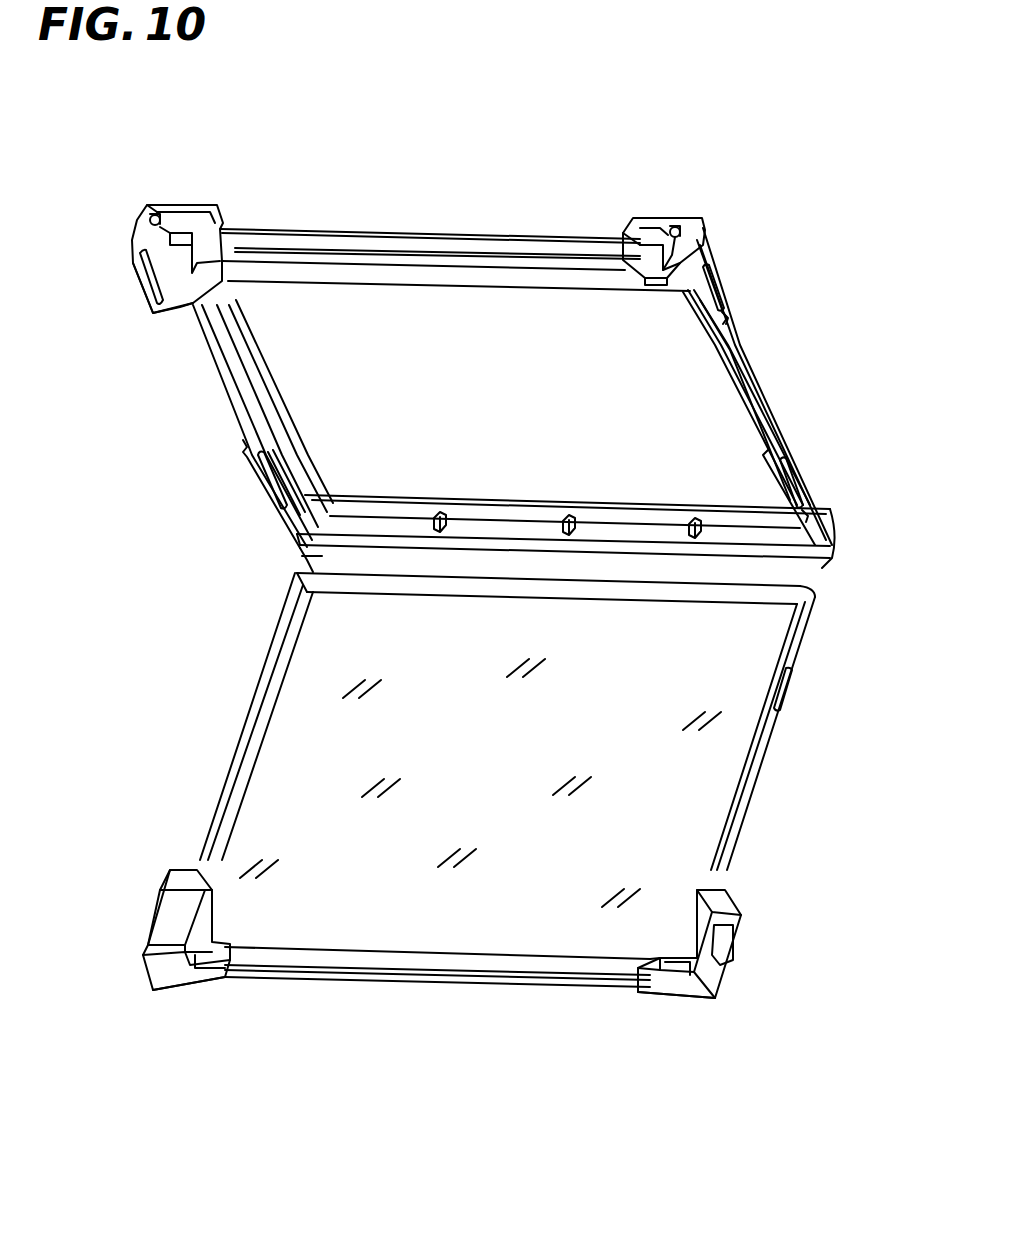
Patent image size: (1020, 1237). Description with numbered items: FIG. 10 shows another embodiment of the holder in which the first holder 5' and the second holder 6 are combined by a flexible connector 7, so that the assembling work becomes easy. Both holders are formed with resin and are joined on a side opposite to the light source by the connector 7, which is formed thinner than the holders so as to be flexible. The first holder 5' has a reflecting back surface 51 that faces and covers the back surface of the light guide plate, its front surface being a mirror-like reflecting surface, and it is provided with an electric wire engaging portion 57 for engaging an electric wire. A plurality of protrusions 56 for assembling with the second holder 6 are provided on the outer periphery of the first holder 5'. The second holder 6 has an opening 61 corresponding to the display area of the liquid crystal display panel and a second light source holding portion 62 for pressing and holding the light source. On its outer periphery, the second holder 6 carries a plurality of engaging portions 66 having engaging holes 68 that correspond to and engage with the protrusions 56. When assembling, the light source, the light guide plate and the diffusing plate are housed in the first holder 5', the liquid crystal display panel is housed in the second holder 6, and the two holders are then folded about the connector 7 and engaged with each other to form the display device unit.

The first holder 5' is at (495, 806).
The second holder 6 is at (502, 358).
The flexible connector 7 is at (330, 553).
The reflecting back surface 51 is at (370, 735).
The protrusions 56 is at (781, 686).
The electric wire engaging portion 57 is at (203, 988).
The opening 61 is at (700, 397).
The second light source holding portion 62 is at (172, 232).
The engaging portions 66 is at (727, 318).
The engaging holes 68 is at (716, 290).